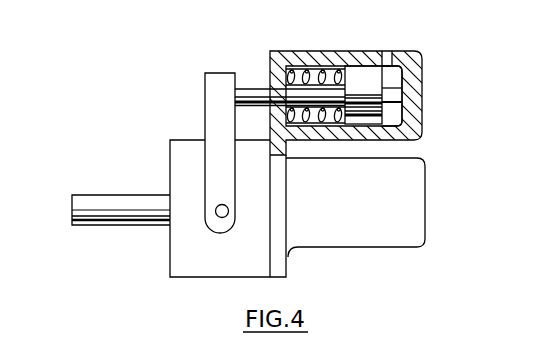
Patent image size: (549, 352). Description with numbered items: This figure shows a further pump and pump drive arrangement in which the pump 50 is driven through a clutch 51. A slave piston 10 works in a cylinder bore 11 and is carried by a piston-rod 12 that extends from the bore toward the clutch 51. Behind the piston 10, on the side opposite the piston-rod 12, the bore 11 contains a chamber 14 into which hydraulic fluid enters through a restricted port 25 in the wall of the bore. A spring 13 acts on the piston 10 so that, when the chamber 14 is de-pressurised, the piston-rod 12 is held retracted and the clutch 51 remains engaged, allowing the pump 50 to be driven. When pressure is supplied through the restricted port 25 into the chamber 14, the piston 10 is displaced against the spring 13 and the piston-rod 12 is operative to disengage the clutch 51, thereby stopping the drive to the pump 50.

The slave piston 10 is at (365, 73).
The cylinder bore 11 is at (335, 63).
The piston-rod 12 is at (248, 95).
The spring 13 is at (305, 72).
The chamber 14 is at (393, 80).
The restricted port 25 is at (389, 57).
The pump 50 is at (377, 225).
The clutch 51 is at (183, 172).